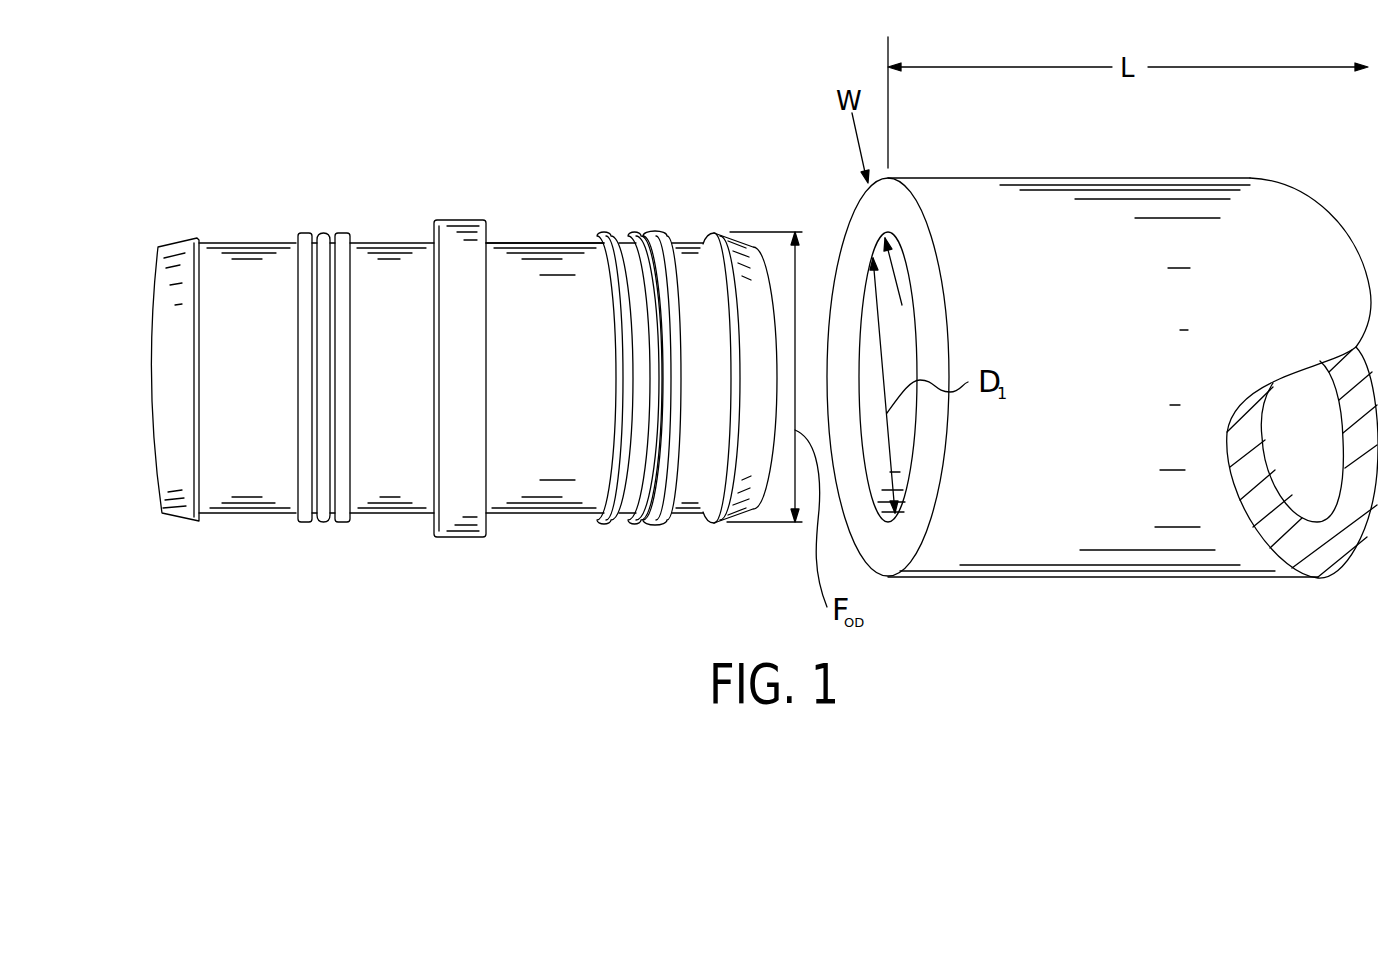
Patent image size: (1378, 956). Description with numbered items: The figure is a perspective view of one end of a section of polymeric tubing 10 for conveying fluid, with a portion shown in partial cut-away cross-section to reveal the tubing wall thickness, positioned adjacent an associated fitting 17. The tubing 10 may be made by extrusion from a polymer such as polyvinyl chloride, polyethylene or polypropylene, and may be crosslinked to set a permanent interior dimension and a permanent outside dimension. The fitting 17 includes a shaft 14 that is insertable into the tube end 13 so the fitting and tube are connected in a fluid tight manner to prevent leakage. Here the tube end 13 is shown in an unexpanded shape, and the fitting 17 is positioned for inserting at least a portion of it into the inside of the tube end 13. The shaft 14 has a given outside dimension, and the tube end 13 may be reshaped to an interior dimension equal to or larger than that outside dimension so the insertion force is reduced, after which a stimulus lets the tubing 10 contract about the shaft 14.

The tubing 10 is at (1187, 187).
The tube end 13 is at (828, 182).
The shaft 14 is at (547, 514).
The fitting 17 is at (522, 267).